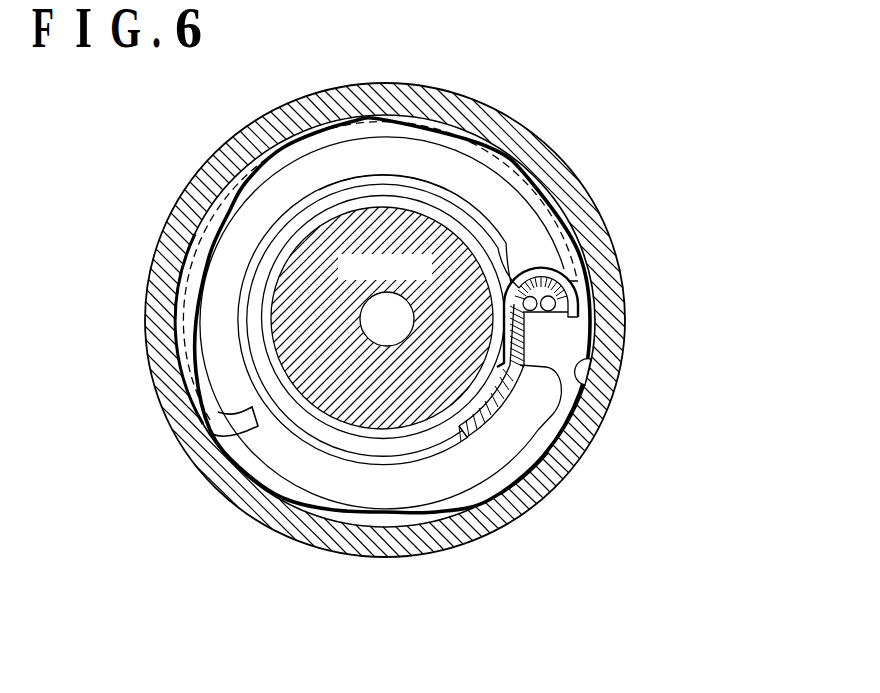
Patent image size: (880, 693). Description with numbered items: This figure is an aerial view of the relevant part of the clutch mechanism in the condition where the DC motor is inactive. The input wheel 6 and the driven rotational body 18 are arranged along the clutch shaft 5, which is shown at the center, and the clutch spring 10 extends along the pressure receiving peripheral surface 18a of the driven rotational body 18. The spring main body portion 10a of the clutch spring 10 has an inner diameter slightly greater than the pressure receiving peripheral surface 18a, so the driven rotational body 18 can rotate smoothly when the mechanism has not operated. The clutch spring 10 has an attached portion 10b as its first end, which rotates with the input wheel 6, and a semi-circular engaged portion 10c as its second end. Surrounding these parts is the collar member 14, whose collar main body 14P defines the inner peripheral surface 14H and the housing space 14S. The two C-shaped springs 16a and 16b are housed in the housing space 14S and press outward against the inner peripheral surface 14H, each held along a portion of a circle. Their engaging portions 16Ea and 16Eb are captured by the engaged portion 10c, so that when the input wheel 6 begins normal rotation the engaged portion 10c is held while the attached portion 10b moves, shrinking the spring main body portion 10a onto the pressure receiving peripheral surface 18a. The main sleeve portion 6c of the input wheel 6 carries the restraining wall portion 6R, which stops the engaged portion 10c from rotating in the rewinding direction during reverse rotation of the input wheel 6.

The clutch shaft 5 is at (401, 340).
The input wheel 6 is at (380, 327).
The main sleeve portion 6c is at (268, 422).
The restraining wall portion 6R is at (471, 432).
The clutch spring 10 is at (262, 282).
The spring main body portion 10a is at (400, 185).
The attached portion 10b is at (512, 394).
The engaged portion 10c is at (533, 267).
The collar member 14 is at (614, 325).
The collar main body 14P is at (461, 321).
The inner peripheral surface 14H is at (601, 396).
The housing space 14S is at (430, 491).
The C-shaped spring 16a is at (548, 458).
The C-shaped spring 16b is at (228, 195).
The engaging portion 16Ea is at (537, 296).
The engaging portion 16Eb is at (574, 292).
The driven rotational body 18 is at (427, 268).
The pressure receiving peripheral surface 18a is at (316, 412).